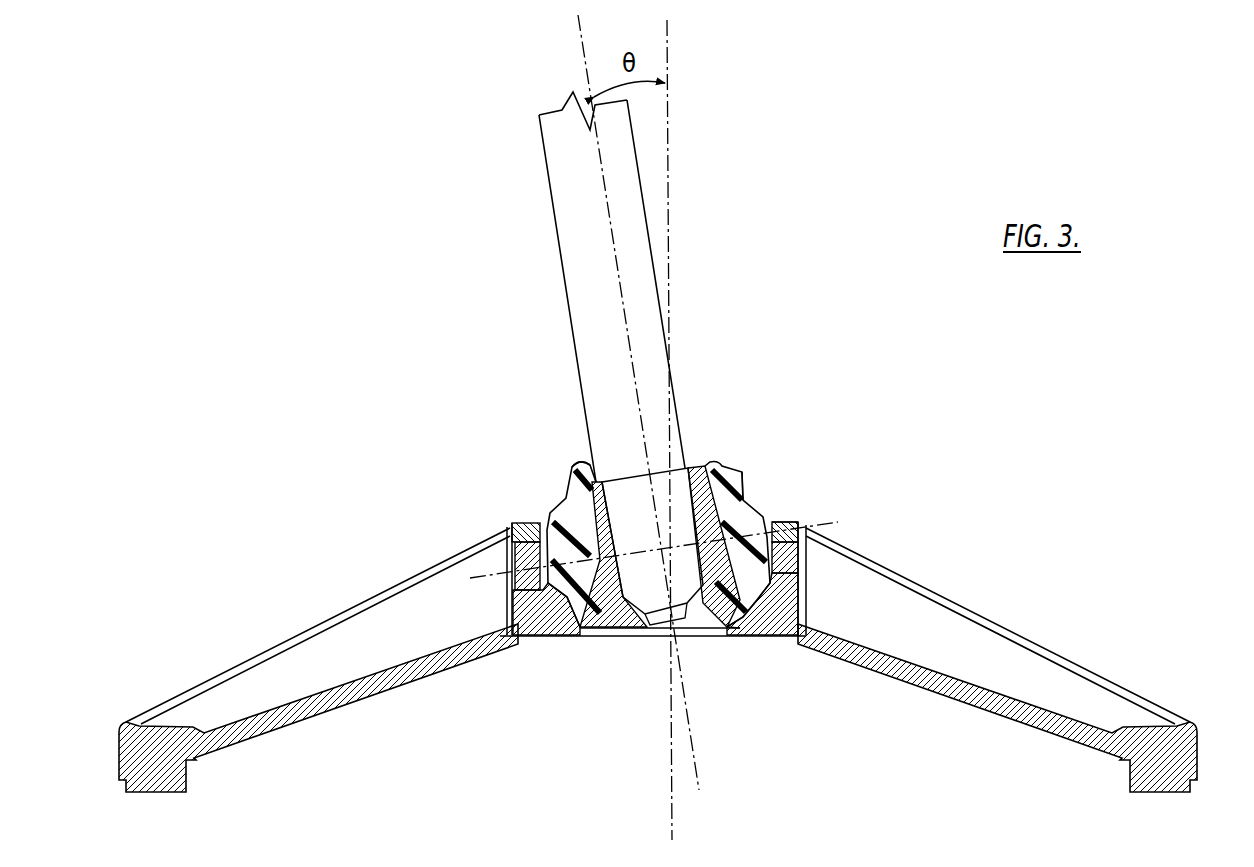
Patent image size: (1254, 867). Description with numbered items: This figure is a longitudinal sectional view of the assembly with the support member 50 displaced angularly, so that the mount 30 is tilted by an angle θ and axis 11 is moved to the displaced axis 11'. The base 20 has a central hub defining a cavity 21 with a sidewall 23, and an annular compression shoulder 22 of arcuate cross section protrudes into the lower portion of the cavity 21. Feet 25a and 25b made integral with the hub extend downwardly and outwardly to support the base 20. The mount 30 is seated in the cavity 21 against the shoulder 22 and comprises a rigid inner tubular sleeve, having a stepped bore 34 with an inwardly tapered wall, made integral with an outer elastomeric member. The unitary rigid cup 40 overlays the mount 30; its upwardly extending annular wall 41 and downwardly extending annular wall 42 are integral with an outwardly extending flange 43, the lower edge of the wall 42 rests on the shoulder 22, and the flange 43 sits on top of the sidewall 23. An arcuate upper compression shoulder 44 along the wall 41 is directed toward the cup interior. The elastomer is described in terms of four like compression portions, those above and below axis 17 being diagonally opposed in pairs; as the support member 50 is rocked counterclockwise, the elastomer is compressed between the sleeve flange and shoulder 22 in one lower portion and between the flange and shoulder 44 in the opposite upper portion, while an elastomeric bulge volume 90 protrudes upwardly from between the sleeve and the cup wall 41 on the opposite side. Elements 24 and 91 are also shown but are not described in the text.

The axis 11 is at (705, 430).
The displaced axis 11' is at (594, 402).
The axis 17 is at (490, 573).
The base 20 is at (658, 659).
The cavity 21 is at (510, 598).
The annular compression shoulder 22 is at (555, 615).
The sidewall 23 is at (783, 543).
The bottom plate 24 is at (600, 640).
The base support or foot 25a is at (280, 693).
The base support or foot 25b is at (995, 670).
The mount 30 is at (572, 428).
The stepped recess or bore 34 is at (680, 452).
The rigid cup 40 is at (798, 475).
The upwardly extending annular wall 41 is at (557, 503).
The downwardly extending annular wall 42 is at (773, 572).
The outwardly extending flange 43 is at (535, 522).
The arcuate upper compression shoulder 44 is at (750, 490).
The moveable support member 50 is at (467, 342).
The elastomeric bulge volume 90 is at (573, 462).
The lower bushing lip 91 is at (725, 630).